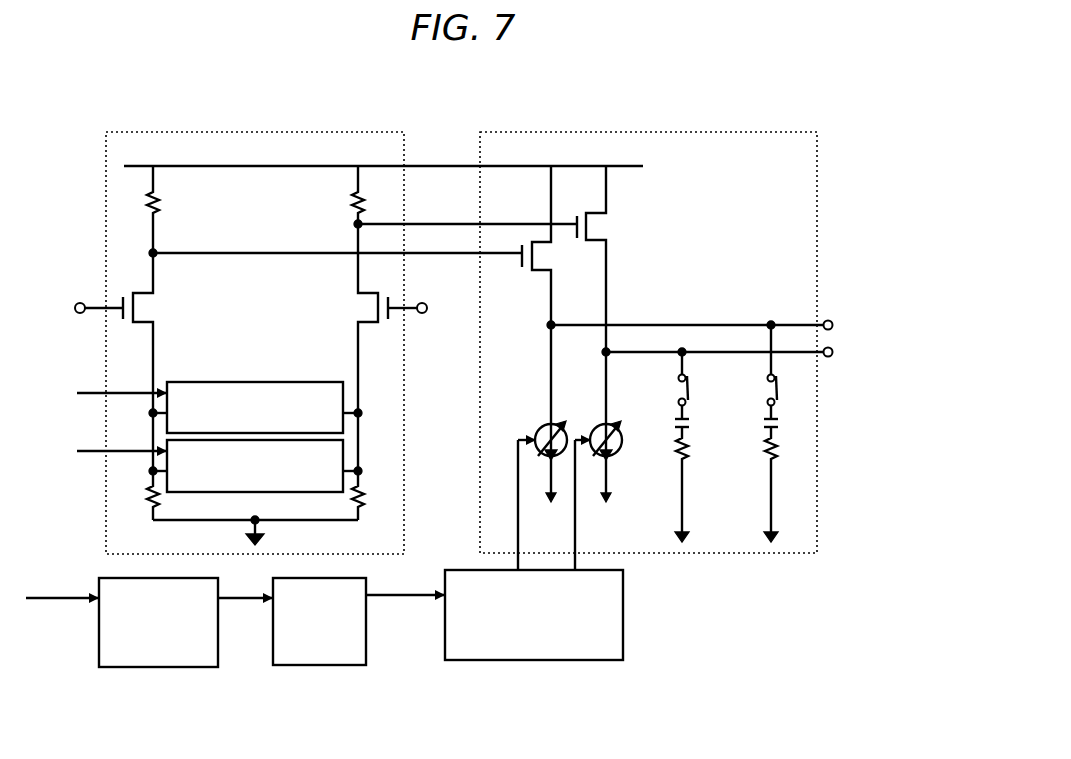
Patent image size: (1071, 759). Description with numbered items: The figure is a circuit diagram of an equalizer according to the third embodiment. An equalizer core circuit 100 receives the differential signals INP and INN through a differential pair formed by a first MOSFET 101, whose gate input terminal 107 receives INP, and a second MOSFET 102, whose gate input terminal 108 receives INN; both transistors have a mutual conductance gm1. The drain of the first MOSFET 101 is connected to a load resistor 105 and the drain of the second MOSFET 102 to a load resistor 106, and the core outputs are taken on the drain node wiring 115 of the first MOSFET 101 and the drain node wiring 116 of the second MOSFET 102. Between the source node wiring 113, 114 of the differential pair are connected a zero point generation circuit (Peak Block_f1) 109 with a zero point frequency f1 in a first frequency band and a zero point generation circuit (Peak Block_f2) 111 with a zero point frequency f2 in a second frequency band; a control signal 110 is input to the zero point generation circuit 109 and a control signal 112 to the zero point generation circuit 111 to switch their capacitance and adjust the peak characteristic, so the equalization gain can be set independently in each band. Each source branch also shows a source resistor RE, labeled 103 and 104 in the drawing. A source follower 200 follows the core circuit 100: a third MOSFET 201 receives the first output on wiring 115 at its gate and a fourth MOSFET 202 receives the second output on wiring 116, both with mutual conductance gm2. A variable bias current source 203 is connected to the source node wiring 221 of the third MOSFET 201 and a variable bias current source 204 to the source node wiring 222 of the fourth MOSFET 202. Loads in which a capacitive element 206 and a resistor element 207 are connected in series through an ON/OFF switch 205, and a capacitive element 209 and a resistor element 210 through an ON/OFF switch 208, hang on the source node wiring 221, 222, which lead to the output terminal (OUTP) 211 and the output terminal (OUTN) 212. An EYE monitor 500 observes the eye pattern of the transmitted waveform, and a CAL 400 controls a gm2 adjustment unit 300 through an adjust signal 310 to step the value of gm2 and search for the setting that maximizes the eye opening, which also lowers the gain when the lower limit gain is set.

The equalizer core circuit 100 is at (268, 131).
The first MOSFET 101 is at (142, 312).
The second MOSFET 102 is at (372, 312).
The emitter resistor RE 103 is at (145, 497).
The emitter resistor RE 104 is at (370, 490).
The load resistor 105 is at (160, 204).
The load resistor 106 is at (350, 203).
The gate input terminal 107 is at (80, 302).
The gate input terminal 108 is at (422, 313).
The zero point generation circuit (Peak Block_f1) 109 is at (246, 390).
The control signal 110 is at (118, 377).
The zero point generation circuit (Peak Block_f2) 111 is at (248, 482).
The control signal 112 is at (118, 437).
The source node wiring 113 is at (153, 345).
The source node wiring 114 is at (358, 353).
The drain node wiring 115 is at (461, 253).
The drain node wiring 116 is at (421, 224).
The source follower 200 is at (660, 132).
The third MOSFET 201 is at (543, 255).
The fourth MOSFET 202 is at (597, 224).
The variable bias current source 203 is at (560, 450).
The variable bias current source 204 is at (615, 450).
The ON/OFF switch 205 is at (676, 385).
The capacitive element 206 is at (677, 423).
The resistor element 207 is at (676, 455).
The ON/OFF switch 208 is at (765, 385).
The capacitive element 209 is at (765, 422).
The resistor element 210 is at (765, 455).
The output terminal (OUTP) 211 is at (828, 320).
The output terminal (OUTN) 212 is at (828, 357).
The source node wiring 221 is at (551, 300).
The source node wiring 222 is at (606, 295).
The gm2 adjustment unit 300 is at (522, 660).
The adjust signal 310 is at (405, 598).
The CAL 400 is at (320, 665).
The EYE monitor 500 is at (153, 667).